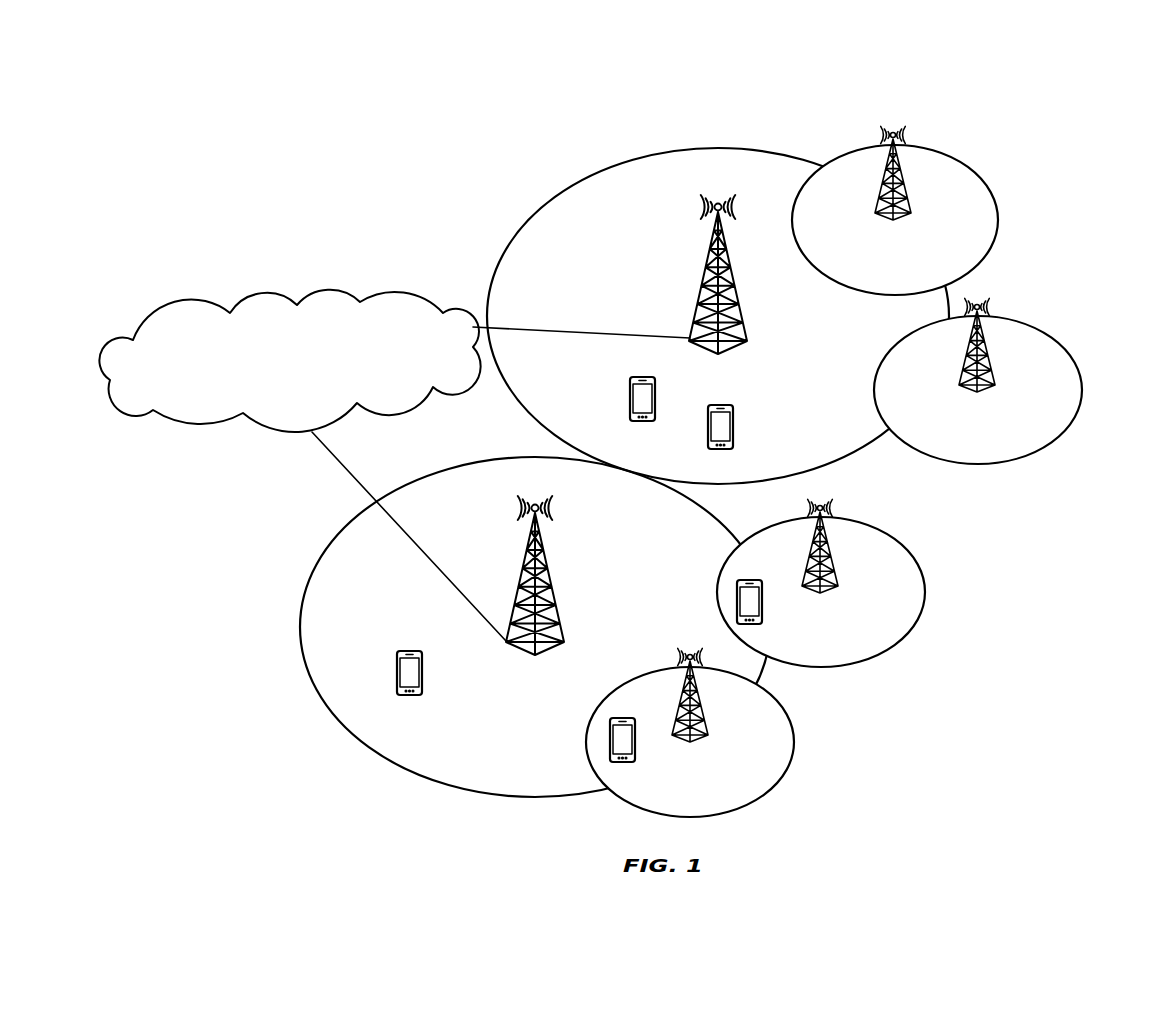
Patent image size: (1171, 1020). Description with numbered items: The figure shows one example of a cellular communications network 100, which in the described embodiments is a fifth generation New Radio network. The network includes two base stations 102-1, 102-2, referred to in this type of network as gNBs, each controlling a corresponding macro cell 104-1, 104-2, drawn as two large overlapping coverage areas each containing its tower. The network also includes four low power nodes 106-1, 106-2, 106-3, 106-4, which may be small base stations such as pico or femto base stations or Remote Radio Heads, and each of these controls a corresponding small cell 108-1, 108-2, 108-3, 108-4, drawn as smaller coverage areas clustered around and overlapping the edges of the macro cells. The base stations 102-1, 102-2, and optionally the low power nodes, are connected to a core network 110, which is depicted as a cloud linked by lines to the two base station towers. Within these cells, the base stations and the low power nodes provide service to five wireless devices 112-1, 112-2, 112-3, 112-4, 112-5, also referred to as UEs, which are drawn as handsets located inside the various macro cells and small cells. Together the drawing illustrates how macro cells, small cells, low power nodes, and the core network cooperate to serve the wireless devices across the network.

The cellular communications network 100 is at (1062, 117).
The base station 102-1 is at (553, 590).
The base station 102-2 is at (738, 290).
The macro cell 104-1 is at (410, 768).
The macro cell 104-2 is at (722, 150).
The low power node 106-1 is at (706, 719).
The low power node 106-2 is at (838, 578).
The low power node 106-3 is at (995, 370).
The low power node 106-4 is at (910, 197).
The small cell 108-1 is at (793, 742).
The small cell 108-2 is at (925, 603).
The small cell 108-3 is at (1082, 396).
The small cell 108-4 is at (996, 213).
The core network 110 is at (276, 400).
The wireless device 112-1 is at (648, 700).
The wireless device 112-2 is at (760, 560).
The wireless device 112-3 is at (423, 676).
The wireless device 112-4 is at (657, 404).
The wireless device 112-5 is at (734, 427).